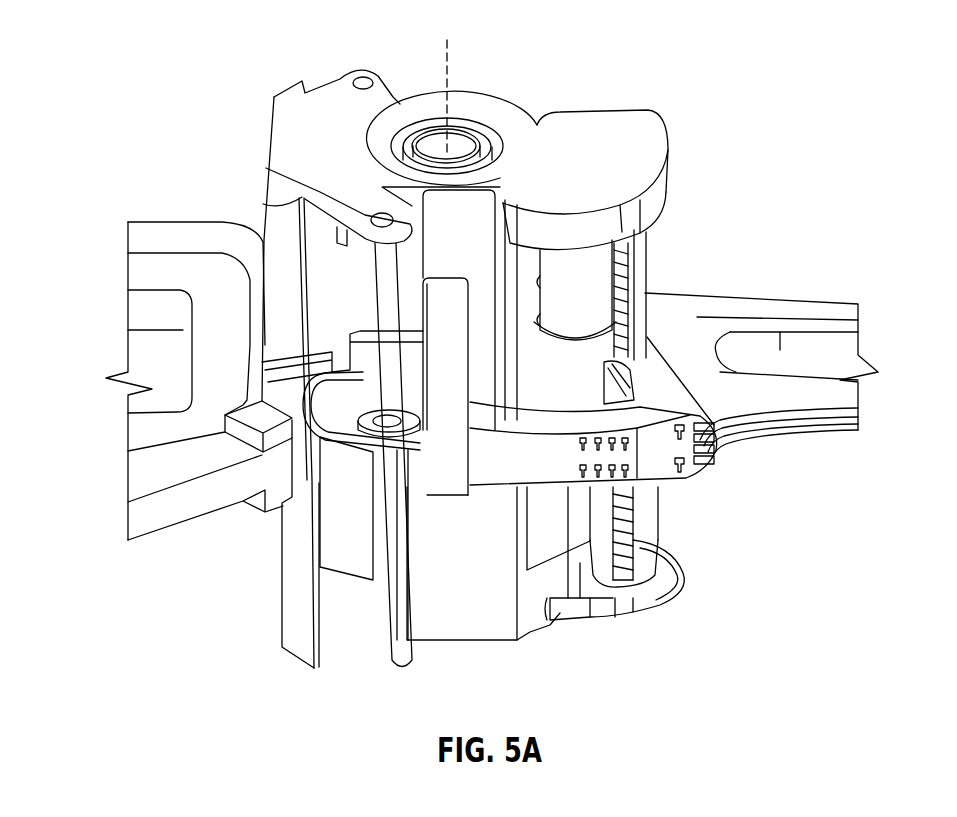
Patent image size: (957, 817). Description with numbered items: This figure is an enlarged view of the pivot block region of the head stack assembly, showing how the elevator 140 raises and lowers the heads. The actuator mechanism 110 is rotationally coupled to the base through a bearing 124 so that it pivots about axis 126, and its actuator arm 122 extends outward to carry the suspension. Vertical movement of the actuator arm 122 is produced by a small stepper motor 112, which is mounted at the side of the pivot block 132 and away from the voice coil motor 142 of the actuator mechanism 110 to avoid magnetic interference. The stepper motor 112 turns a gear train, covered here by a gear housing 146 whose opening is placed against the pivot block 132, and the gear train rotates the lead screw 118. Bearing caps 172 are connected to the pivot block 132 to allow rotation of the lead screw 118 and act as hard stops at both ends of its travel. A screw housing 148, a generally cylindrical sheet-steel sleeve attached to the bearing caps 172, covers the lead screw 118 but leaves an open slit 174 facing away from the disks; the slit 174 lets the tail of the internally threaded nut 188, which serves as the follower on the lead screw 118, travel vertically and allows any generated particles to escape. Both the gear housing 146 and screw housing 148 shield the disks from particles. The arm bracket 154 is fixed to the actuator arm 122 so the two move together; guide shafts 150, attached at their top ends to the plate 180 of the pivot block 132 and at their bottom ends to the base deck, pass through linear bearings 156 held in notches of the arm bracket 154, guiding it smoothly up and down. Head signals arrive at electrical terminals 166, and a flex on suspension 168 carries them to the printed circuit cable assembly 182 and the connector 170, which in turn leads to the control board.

The actuator mechanism 110 is at (155, 541).
The stepper motor 112 is at (596, 273).
The lead screw 118 is at (672, 582).
The actuator arm 122 is at (808, 324).
The bearing 124 is at (497, 126).
The axis 126 is at (452, 80).
The pivot block 132 is at (341, 105).
The elevator 140 is at (678, 196).
The voice coil motor 142 is at (143, 438).
The gear housing 146 is at (628, 133).
The screw housing 148 is at (635, 293).
The guide shafts 150 is at (394, 640).
The arm bracket 154 is at (658, 406).
The linear bearings 156 is at (408, 457).
The electrical terminals 166 is at (594, 452).
The flex on suspension 168 is at (454, 316).
The connector 170 is at (392, 508).
The bearing caps 172 is at (667, 597).
The slit 174 is at (630, 580).
The plate 180 is at (300, 147).
The printed circuit cable assembly 182 is at (488, 613).
The threaded nut 188 is at (620, 388).